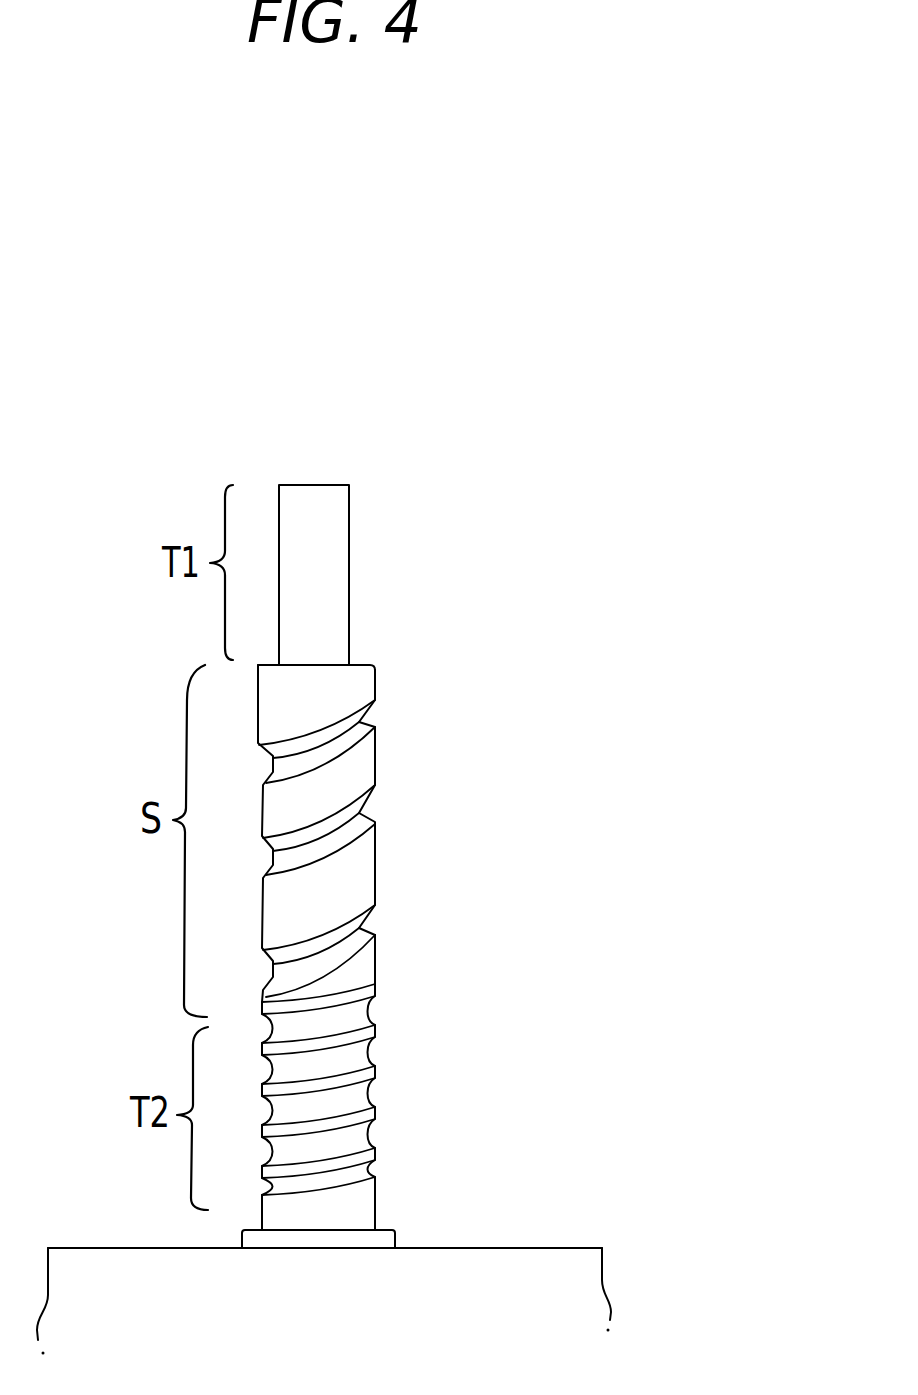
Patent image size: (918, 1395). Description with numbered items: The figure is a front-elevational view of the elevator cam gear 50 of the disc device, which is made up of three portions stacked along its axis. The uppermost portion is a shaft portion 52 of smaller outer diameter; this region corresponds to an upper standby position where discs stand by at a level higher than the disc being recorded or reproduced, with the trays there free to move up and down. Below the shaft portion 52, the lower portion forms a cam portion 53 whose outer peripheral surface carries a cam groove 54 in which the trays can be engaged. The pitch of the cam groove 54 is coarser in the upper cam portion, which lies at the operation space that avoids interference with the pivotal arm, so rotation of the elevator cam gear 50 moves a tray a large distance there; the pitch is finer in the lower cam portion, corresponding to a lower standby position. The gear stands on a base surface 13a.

The elevator cam gear 50 is at (497, 694).
The shaft portion 52 is at (316, 497).
The cam portion 53 is at (360, 665).
The cam groove 54 is at (373, 713).
The base surface 13a is at (524, 1247).